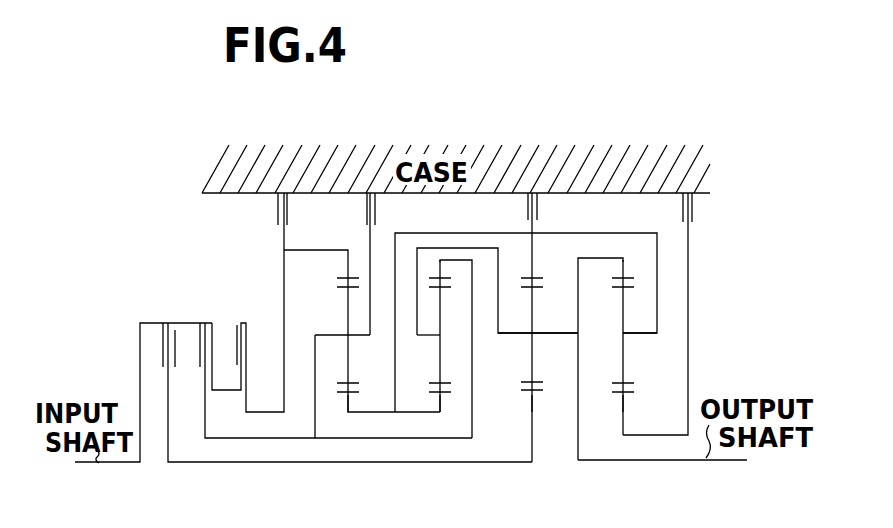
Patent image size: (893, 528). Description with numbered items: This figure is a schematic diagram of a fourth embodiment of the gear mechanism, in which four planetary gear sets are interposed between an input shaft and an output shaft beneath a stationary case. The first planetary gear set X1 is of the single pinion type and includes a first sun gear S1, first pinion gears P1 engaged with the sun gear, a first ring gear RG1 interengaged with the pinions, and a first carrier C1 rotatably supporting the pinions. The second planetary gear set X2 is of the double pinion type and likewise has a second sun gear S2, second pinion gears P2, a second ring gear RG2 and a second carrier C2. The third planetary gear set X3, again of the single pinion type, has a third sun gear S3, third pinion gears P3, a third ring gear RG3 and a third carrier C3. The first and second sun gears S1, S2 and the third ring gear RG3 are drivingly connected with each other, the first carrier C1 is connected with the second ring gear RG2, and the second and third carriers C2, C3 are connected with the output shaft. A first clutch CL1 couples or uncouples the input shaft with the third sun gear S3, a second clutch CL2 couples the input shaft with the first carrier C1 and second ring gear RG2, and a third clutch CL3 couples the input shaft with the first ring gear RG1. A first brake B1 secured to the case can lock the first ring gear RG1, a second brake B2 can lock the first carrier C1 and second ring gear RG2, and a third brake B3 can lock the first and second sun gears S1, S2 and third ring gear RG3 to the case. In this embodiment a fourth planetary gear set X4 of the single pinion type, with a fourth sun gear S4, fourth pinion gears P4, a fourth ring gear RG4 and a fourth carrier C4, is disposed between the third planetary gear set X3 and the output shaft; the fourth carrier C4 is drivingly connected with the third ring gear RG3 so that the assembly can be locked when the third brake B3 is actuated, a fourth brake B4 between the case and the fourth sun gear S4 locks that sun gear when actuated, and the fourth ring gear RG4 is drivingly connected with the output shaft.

The first clutch CL1 is at (335, 377).
The second clutch CL2 is at (203, 323).
The third clutch CL3 is at (248, 302).
The first brake B1 is at (267, 211).
The second brake B2 is at (387, 264).
The third brake B3 is at (547, 261).
The fourth brake B4 is at (675, 314).
The first ring gear RG1 is at (348, 264).
The second ring gear RG2 is at (442, 263).
The third ring gear RG3 is at (533, 263).
The fourth ring gear RG4 is at (623, 263).
The first carrier C1 is at (335, 335).
The second carrier C2 is at (440, 337).
The third carrier C3 is at (521, 333).
The fourth carrier C4 is at (633, 333).
The first pinion gears P1 is at (349, 364).
The second pinion gears P2 is at (440, 373).
The third pinion gears P3 is at (532, 371).
The fourth pinion gears P4 is at (625, 370).
The first planetary gear set X1 is at (341, 399).
The second planetary gear set X2 is at (433, 399).
The third planetary gear set X3 is at (525, 399).
The fourth planetary gear set X4 is at (615, 399).
The first sun gear S1 is at (348, 400).
The second sun gear S2 is at (442, 400).
The third sun gear S3 is at (534, 400).
The fourth sun gear S4 is at (625, 400).